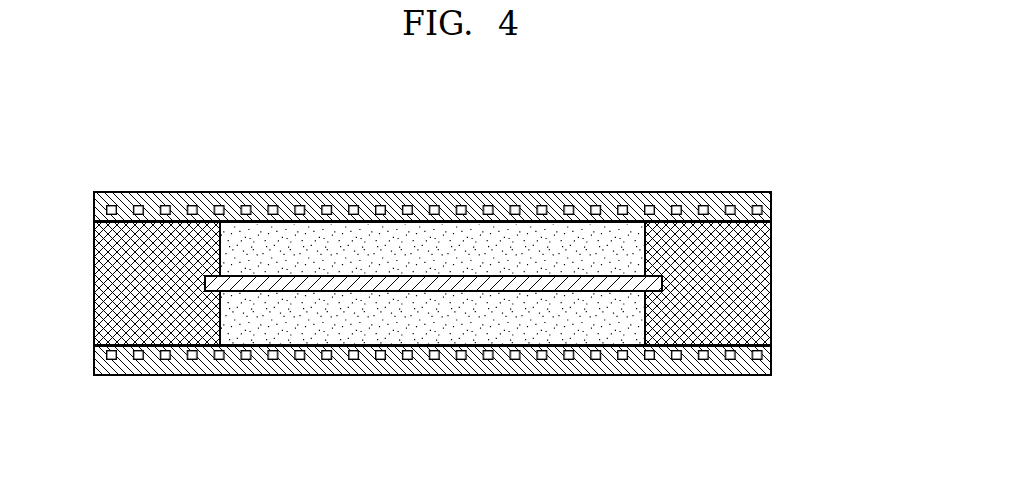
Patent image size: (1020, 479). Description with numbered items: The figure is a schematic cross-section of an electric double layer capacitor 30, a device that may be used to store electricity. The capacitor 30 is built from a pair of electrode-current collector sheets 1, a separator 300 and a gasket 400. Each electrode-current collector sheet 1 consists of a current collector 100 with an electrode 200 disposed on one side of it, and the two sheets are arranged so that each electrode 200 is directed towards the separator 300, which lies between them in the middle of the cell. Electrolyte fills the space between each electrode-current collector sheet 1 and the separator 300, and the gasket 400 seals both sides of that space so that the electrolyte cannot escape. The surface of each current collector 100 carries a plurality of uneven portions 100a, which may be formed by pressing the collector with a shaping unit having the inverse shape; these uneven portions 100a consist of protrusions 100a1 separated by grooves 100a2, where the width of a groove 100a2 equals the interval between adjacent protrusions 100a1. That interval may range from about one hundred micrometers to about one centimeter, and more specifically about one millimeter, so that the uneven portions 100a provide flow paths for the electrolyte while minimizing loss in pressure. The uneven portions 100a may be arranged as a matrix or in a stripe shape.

The electric double layer capacitor 30 is at (686, 174).
The electrode-current collector sheet 1 is at (492, 325).
The current collector 100 is at (475, 325).
The uneven portions 100a is at (435, 339).
The protrusion 100a1 is at (233, 350).
The groove 100a2 is at (222, 355).
The electrode 200 is at (771, 222).
The separator 300 is at (355, 255).
The gasket 400 is at (772, 284).